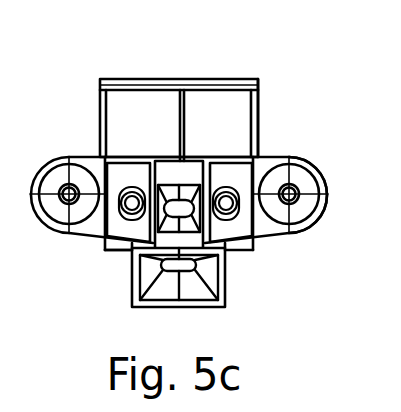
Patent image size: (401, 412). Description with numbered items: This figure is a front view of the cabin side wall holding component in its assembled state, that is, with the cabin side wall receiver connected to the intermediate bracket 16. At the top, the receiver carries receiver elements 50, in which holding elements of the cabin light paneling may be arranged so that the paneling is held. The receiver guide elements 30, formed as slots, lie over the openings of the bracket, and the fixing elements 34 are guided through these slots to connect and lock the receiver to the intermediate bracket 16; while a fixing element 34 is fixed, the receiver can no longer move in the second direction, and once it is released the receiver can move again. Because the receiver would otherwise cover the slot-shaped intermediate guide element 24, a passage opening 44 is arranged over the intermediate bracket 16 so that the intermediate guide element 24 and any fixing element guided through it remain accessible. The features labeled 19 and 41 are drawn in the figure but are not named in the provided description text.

The receiver element 50 is at (228, 90).
The housing side wall 19 is at (258, 100).
The receiver guide element 30 is at (224, 186).
The mounting eye 41 is at (302, 183).
The fixing element 34 is at (233, 206).
The intermediate guide element 24 is at (203, 203).
The passage opening 44 is at (168, 230).
The intermediate bracket 16 is at (132, 294).